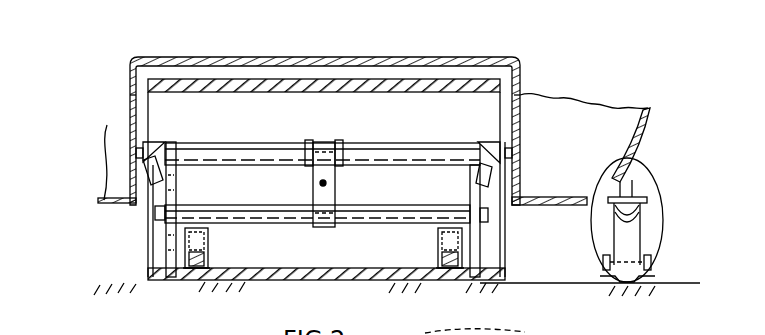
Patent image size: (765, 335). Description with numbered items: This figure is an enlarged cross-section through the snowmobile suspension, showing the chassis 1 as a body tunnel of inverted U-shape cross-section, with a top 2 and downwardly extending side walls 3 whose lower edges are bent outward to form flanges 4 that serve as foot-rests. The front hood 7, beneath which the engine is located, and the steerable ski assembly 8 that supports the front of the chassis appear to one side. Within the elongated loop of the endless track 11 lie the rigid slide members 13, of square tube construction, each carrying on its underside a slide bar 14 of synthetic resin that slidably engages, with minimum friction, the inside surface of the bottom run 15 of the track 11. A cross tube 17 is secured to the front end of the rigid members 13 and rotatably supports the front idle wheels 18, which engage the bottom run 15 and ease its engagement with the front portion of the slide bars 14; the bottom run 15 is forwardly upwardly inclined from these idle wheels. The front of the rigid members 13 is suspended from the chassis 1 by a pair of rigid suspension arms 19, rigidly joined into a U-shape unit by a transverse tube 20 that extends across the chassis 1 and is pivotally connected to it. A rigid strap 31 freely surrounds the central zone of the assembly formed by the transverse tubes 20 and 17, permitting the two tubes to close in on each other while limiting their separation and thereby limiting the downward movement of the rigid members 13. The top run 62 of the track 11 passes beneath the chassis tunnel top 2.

The chassis 1 is at (346, 135).
The top 2 is at (248, 57).
The side walls 3 is at (558, 92).
The flanges 4 is at (116, 200).
The front hood 7 is at (652, 172).
The steerable ski assembly 8 is at (653, 237).
The endless track 11 is at (287, 288).
The rigid slide members 13 is at (210, 250).
The slide bar 14 is at (205, 284).
The bottom run 15 is at (315, 288).
The cross tube 17 is at (232, 206).
The front idle wheels 18 is at (165, 246).
The rigid suspension arms 19 is at (430, 170).
The transverse tube 20 is at (240, 148).
The rigid strap 31 is at (330, 181).
The top run 62 is at (397, 79).